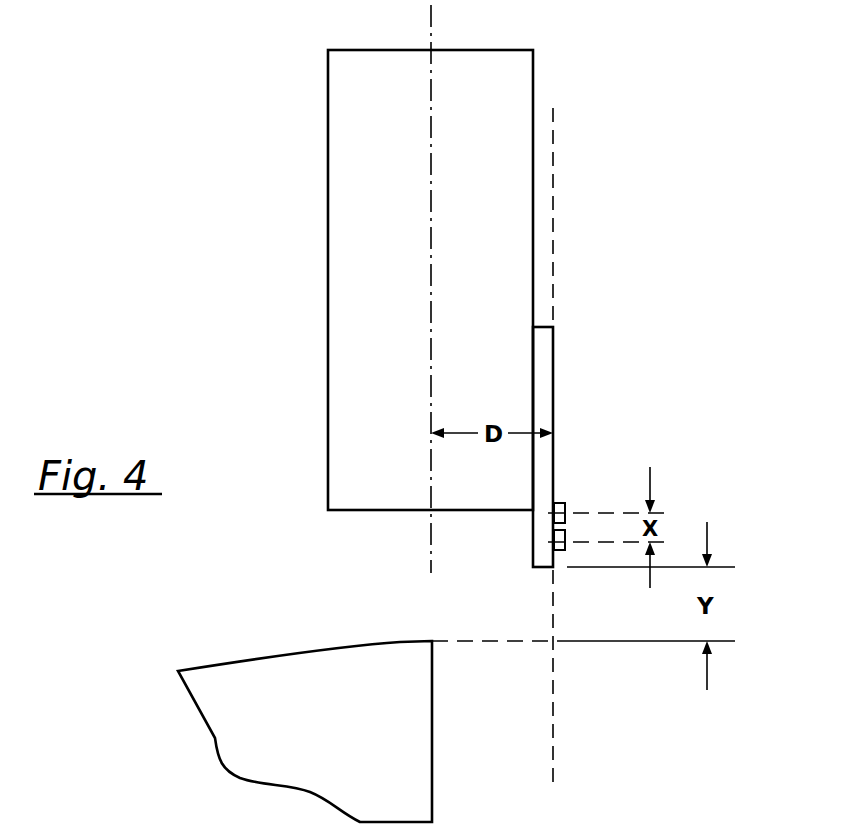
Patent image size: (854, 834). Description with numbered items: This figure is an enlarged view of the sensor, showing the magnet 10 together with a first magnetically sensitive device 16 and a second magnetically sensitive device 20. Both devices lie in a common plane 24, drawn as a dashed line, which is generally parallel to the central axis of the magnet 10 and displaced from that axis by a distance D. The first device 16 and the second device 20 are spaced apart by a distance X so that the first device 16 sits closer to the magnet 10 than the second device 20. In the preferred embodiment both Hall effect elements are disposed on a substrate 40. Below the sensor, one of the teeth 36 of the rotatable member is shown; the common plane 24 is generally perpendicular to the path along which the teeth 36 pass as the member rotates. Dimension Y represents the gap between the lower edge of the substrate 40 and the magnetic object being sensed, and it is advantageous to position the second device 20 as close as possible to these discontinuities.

The magnet 10 is at (513, 94).
The common plane 24 is at (553, 150).
The substrate 40 is at (553, 368).
The first magnetically sensitive device 16 is at (563, 503).
The second magnetically sensitive device 20 is at (563, 550).
The teeth 36 is at (365, 733).